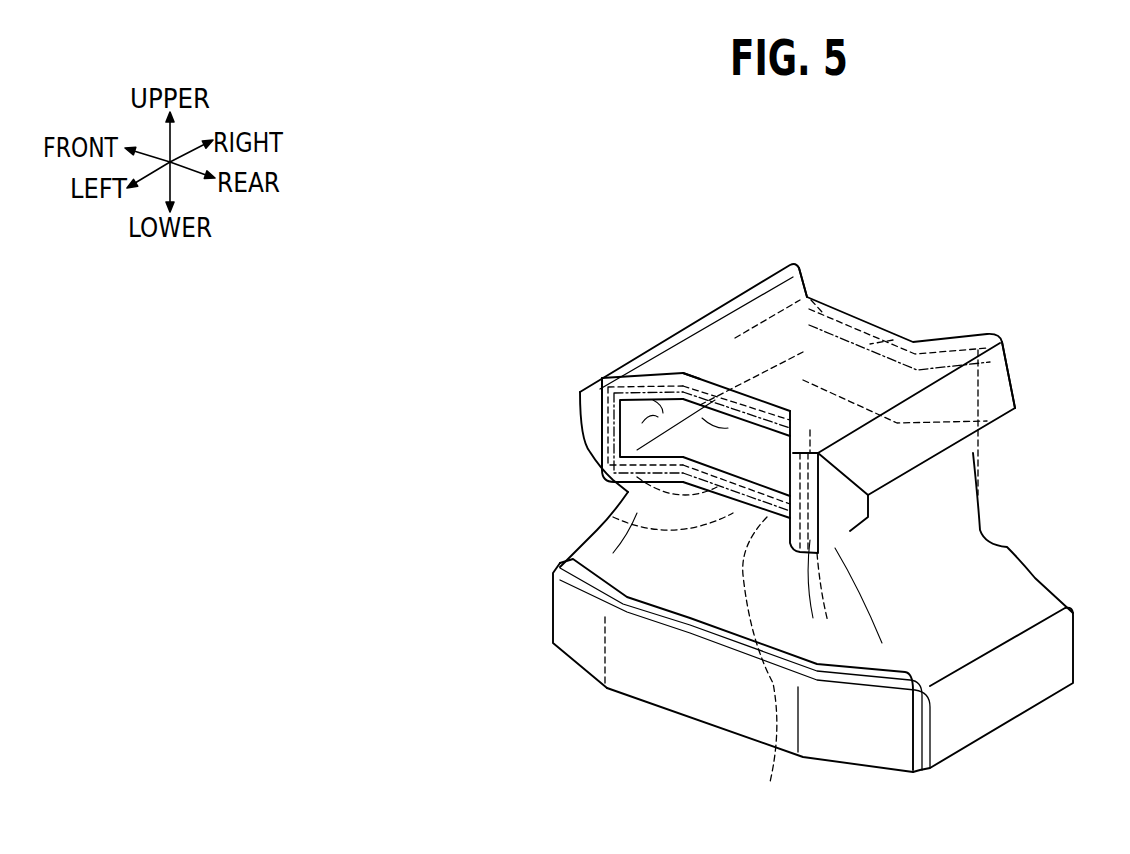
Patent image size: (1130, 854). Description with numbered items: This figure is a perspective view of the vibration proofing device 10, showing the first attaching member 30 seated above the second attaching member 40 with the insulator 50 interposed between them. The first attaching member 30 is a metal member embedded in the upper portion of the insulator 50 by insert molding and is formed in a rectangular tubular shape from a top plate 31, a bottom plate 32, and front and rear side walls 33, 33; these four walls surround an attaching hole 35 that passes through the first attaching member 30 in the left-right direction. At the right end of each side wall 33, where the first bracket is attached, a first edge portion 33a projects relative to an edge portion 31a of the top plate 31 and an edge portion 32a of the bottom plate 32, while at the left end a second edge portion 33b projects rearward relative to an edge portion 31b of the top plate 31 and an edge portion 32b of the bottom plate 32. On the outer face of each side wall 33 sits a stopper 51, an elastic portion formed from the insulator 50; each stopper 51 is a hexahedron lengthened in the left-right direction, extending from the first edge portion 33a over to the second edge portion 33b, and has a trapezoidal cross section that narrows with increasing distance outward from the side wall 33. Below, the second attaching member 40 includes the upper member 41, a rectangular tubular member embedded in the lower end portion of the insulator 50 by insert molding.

The vibration proofing device 10 is at (616, 303).
The first attaching member 30 is at (763, 266).
The top plate 31 is at (732, 358).
The edge portion of the top plate 31a is at (865, 403).
The edge portion of the top plate 31b is at (687, 372).
The bottom plate 32 is at (628, 485).
The edge portion of the bottom plate 32a is at (893, 340).
The edge portion of the bottom plate 32b is at (617, 517).
The side wall 33 is at (593, 380).
The first edge portion 33a is at (796, 262).
The second edge portion 33b is at (583, 430).
The attaching hole 35 is at (630, 374).
The second attaching member 40 is at (618, 720).
The upper member 41 is at (713, 697).
The insulator 50 is at (993, 565).
The stopper 51 is at (580, 404).